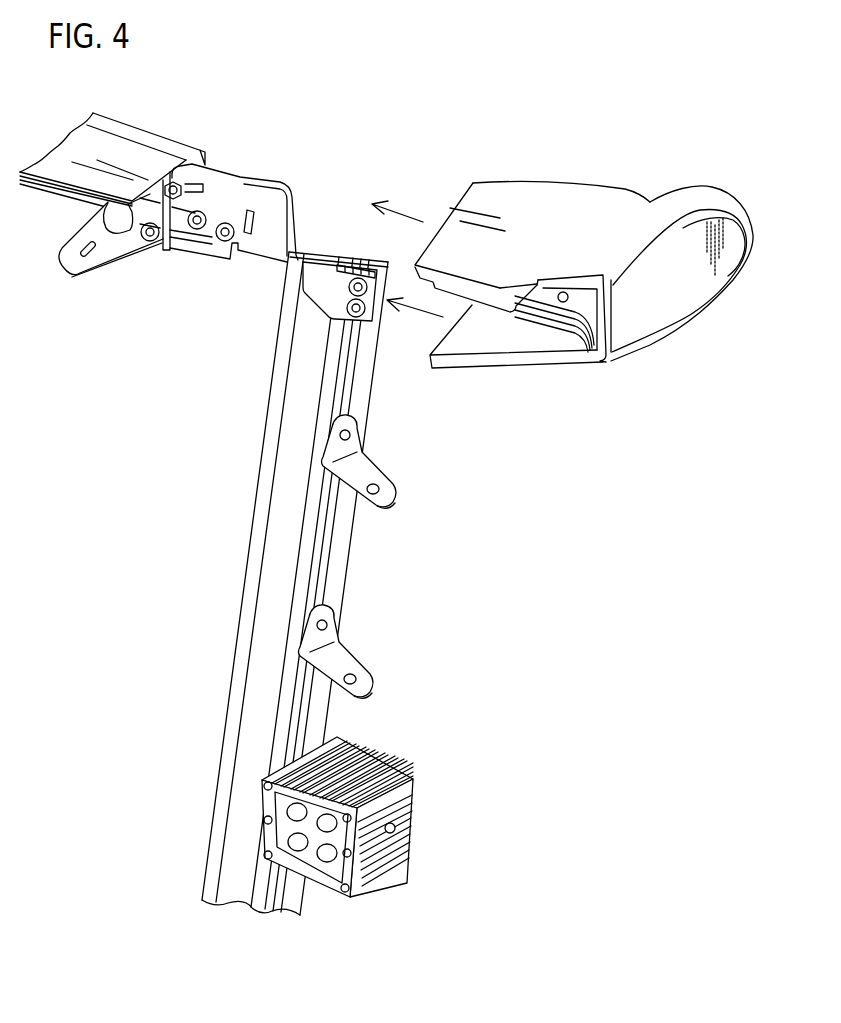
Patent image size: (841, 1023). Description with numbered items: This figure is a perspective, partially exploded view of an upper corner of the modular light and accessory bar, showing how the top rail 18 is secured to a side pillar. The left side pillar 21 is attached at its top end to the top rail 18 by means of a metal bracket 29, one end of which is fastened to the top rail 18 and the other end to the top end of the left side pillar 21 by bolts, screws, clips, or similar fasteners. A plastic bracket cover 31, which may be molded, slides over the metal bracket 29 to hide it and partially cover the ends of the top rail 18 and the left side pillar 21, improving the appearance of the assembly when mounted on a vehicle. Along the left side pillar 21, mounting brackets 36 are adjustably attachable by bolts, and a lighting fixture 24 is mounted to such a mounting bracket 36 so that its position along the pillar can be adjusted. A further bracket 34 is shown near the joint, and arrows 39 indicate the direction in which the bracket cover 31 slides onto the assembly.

The top rail 18 is at (115, 152).
The left side pillar 21 is at (327, 542).
The lighting fixture 24 is at (383, 757).
The metal bracket 29 is at (231, 194).
The bracket cover 31 is at (677, 303).
The hinge bracket 34 is at (93, 262).
The mounting bracket 36 is at (360, 477).
The direction arrows 39 is at (403, 212).